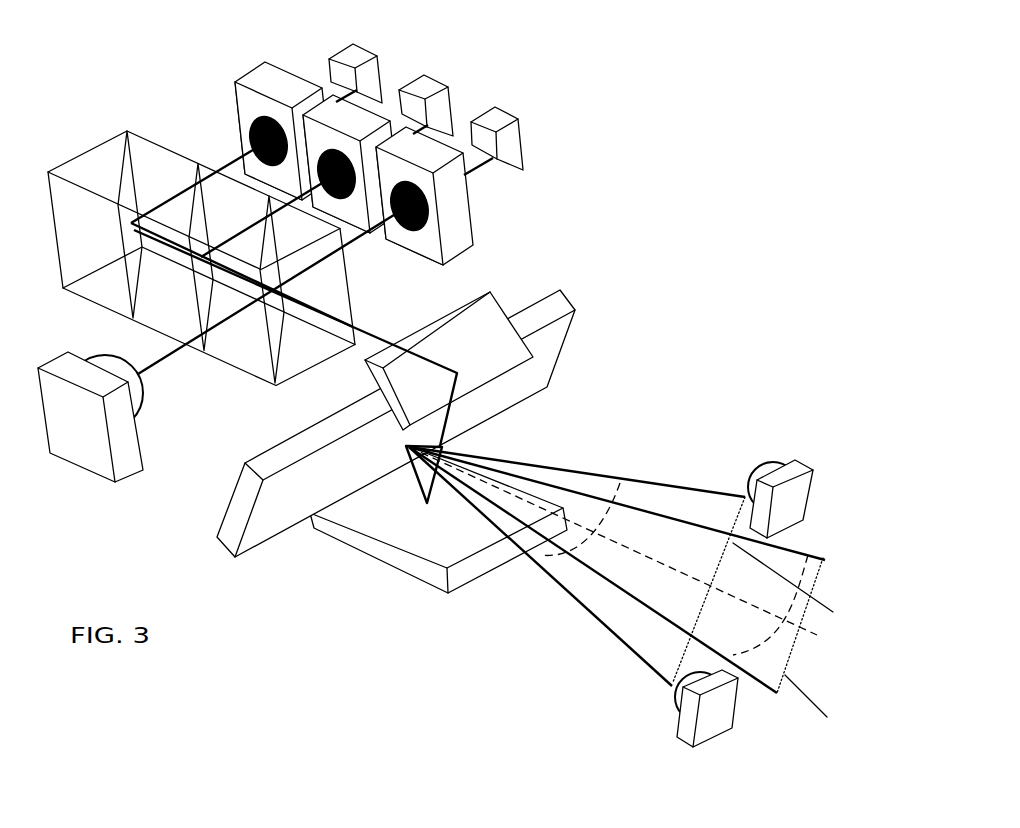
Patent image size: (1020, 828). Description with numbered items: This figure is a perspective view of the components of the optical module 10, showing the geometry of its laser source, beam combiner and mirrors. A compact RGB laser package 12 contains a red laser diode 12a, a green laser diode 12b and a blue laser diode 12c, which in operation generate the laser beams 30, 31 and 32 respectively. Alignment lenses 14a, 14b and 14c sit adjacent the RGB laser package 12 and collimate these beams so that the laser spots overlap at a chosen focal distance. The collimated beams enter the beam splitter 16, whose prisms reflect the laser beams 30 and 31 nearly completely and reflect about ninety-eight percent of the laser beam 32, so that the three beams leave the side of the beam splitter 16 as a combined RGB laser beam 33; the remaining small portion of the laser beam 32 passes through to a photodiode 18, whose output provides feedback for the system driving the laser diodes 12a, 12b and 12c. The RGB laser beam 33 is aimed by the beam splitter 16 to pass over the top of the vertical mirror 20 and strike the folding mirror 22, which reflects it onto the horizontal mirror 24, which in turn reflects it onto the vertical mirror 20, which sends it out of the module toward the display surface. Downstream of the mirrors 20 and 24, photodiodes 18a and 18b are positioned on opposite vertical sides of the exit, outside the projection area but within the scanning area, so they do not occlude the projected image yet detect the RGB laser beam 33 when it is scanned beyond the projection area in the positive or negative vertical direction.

The optical module 10 is at (669, 211).
The RGB laser package 12 is at (328, 39).
The red laser diode 12a is at (363, 48).
The green laser diode 12b is at (437, 80).
The blue laser diode 12c is at (503, 112).
The alignment lens 14a is at (237, 107).
The alignment lens 14b is at (332, 97).
The alignment lens 14c is at (473, 218).
The beam splitter 16 is at (57, 252).
The photodiode 18 is at (41, 387).
The photodiode 18a is at (808, 491).
The photodiode 18b is at (725, 733).
The vertical mirror 20 is at (258, 453).
The folding mirror 22 is at (499, 291).
The horizontal mirror 24 is at (362, 554).
The laser beam 30 is at (294, 268).
The laser beam 31 is at (314, 191).
The laser beam 32 is at (315, 266).
The combined RGB laser beam 33 is at (615, 550).